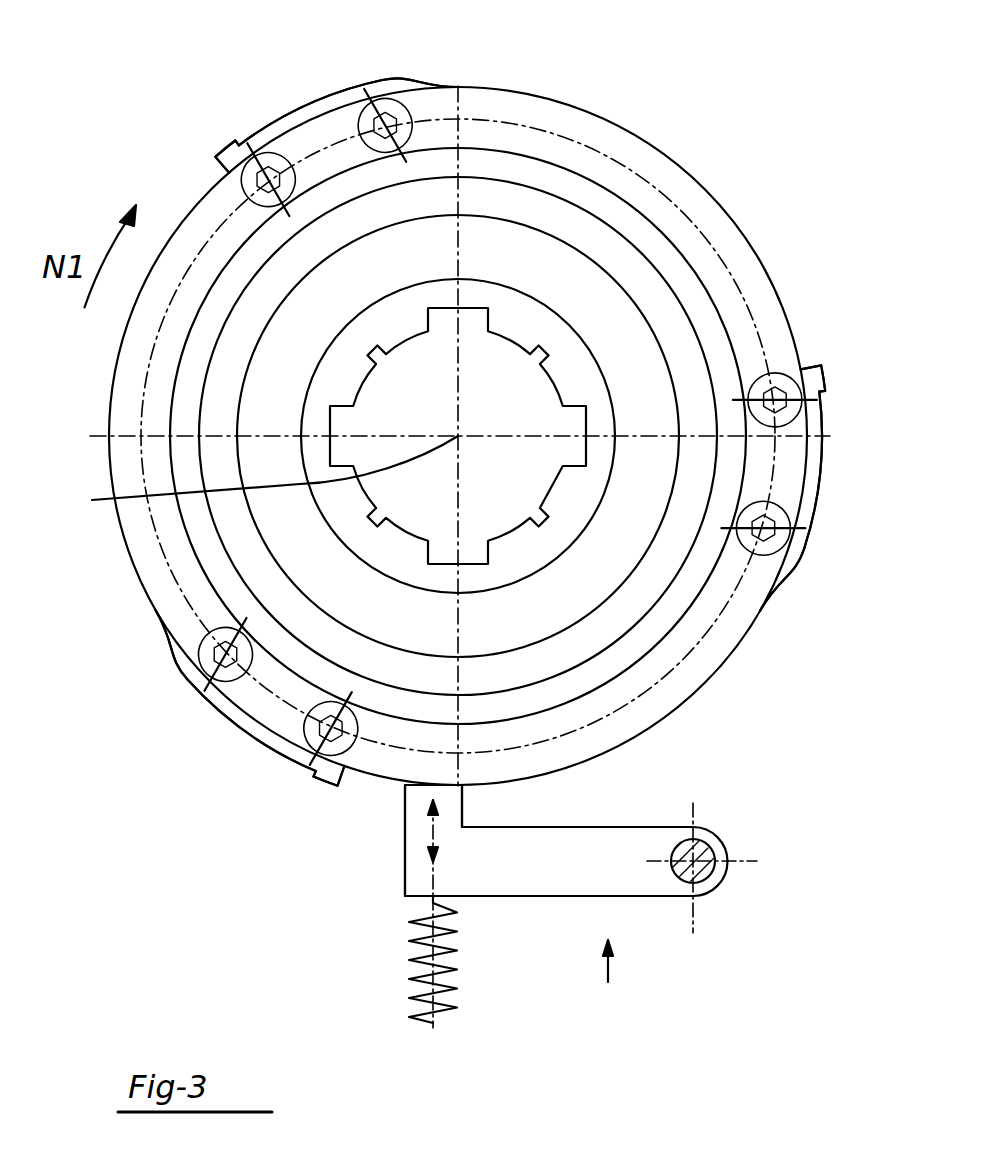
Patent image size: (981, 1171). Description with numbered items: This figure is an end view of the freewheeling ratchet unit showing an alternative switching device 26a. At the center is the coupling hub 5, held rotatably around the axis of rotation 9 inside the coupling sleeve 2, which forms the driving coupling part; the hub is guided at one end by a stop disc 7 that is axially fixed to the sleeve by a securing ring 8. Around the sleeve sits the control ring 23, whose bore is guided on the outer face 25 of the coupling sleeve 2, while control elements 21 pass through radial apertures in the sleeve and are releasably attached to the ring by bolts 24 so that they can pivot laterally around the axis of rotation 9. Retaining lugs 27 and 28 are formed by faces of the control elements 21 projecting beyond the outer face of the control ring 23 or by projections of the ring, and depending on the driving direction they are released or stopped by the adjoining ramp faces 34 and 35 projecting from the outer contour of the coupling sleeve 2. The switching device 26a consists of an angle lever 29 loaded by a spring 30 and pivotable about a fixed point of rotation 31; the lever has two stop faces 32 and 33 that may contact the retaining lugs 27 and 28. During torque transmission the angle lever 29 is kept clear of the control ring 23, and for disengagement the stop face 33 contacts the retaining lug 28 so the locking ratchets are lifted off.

The coupling sleeve 2 is at (680, 266).
The coupling hub 5 is at (531, 327).
The stop disc 7 is at (542, 255).
The securing ring 8 is at (500, 198).
The axis of rotation 9 is at (258, 478).
The control element 21 is at (300, 115).
The control ring 23 is at (130, 370).
The bolt 24 is at (768, 372).
The outer face of the coupling sleeve 25 is at (737, 306).
The switching device 26a is at (620, 980).
The retaining lug 27 is at (218, 162).
The retaining lug 28 is at (405, 78).
The angle lever 29 is at (610, 884).
The spring 30 is at (410, 942).
The fixed point of rotation 31 is at (708, 888).
The stop face 32 is at (404, 826).
The stop face 33 is at (463, 808).
The ramp face 34 is at (430, 84).
The ramp face 35 is at (245, 152).